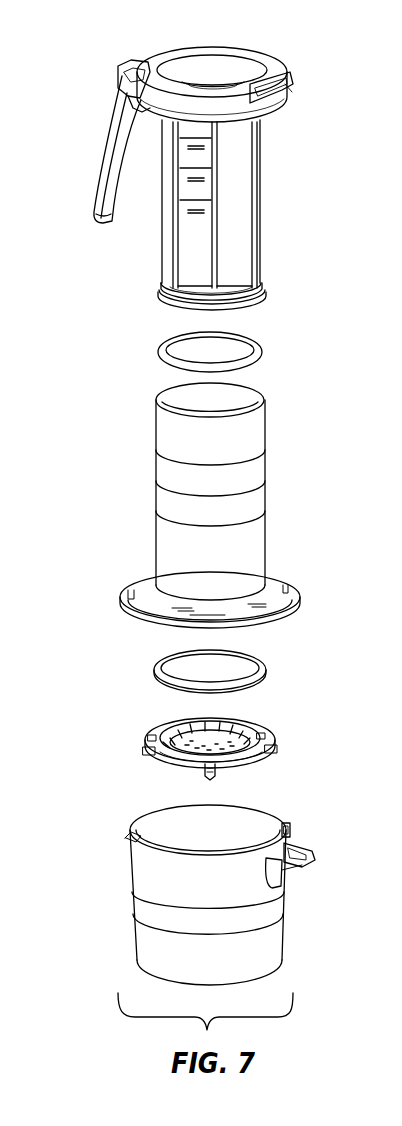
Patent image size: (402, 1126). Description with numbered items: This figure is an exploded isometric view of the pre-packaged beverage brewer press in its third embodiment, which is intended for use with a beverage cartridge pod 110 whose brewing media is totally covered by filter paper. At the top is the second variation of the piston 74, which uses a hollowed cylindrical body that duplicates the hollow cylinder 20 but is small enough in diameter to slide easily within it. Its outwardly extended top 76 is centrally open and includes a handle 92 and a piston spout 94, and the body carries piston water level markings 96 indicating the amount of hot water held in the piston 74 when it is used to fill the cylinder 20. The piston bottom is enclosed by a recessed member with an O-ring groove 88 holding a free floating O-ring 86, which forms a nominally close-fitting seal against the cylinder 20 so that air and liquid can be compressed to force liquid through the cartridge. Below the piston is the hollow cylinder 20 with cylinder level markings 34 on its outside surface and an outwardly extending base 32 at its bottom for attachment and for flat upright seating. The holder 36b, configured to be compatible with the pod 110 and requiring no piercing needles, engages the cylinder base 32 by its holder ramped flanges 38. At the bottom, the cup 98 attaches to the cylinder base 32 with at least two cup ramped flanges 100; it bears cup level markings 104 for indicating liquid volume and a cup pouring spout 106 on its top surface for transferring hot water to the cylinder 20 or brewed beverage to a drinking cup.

The outwardly extended top 76 is at (283, 54).
The handle 92 is at (118, 118).
The piston spout 94 is at (291, 92).
The piston 74 is at (158, 232).
The piston water level markings 96 is at (200, 164).
The O-ring groove 88 is at (262, 290).
The free floating O-ring 86 is at (265, 356).
The cylinder level markings 34 is at (175, 462).
The hollow cylinder 20 is at (268, 524).
The outwardly extending base 32 is at (128, 602).
The beverage cartridge pod 110 is at (268, 675).
The holder ramped flanges 38 is at (280, 738).
The holder 36b is at (150, 744).
The cup ramped flanges 100 is at (288, 826).
The cup level markings 104 is at (150, 906).
The cup pouring spout 106 is at (313, 868).
The cup 98 is at (284, 944).